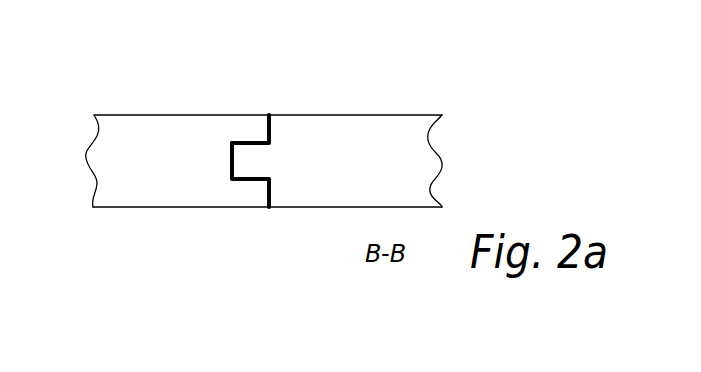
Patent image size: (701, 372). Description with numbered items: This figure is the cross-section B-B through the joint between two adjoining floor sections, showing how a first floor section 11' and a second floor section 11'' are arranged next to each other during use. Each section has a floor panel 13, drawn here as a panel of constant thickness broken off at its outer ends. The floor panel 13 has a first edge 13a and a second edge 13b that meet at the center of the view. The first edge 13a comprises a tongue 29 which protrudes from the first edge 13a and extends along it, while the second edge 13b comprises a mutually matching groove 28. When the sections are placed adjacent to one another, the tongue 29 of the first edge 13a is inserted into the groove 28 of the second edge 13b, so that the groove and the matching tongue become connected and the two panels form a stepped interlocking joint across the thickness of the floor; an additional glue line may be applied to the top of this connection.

The first floor section 11' is at (181, 123).
The second floor section 11'' is at (355, 118).
The floor panel 13 is at (101, 149).
The first edge 13a is at (278, 133).
The second edge 13b is at (267, 133).
The groove 28 is at (246, 134).
The tongue 29 is at (252, 165).